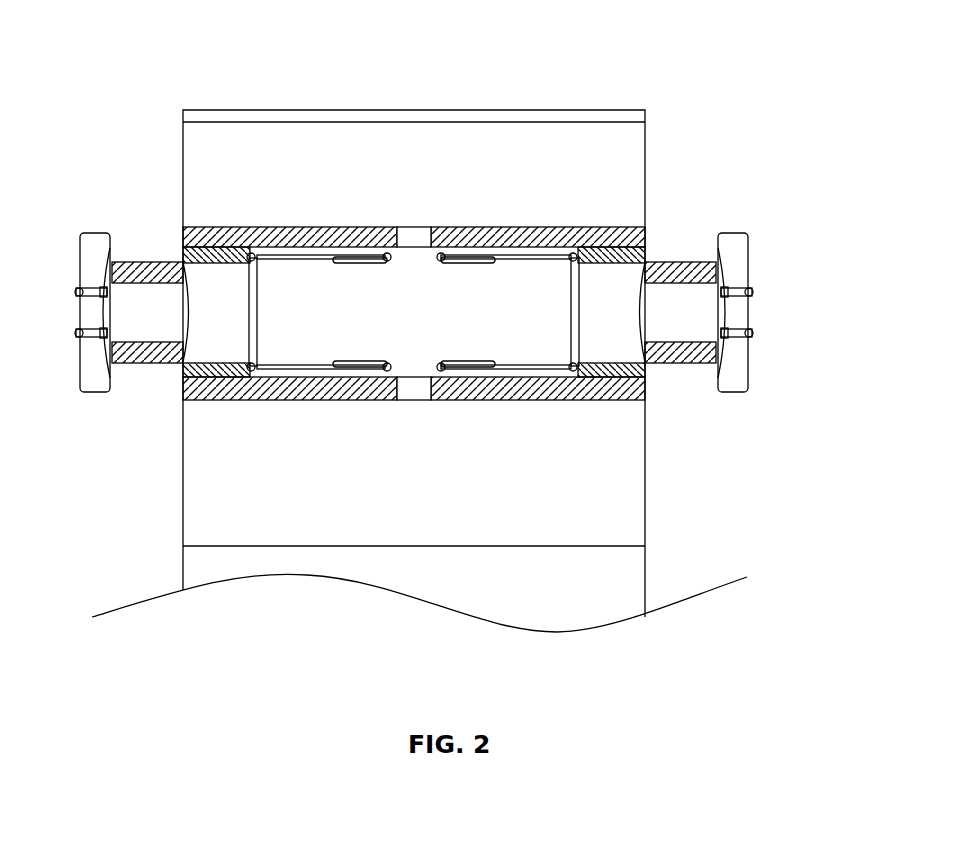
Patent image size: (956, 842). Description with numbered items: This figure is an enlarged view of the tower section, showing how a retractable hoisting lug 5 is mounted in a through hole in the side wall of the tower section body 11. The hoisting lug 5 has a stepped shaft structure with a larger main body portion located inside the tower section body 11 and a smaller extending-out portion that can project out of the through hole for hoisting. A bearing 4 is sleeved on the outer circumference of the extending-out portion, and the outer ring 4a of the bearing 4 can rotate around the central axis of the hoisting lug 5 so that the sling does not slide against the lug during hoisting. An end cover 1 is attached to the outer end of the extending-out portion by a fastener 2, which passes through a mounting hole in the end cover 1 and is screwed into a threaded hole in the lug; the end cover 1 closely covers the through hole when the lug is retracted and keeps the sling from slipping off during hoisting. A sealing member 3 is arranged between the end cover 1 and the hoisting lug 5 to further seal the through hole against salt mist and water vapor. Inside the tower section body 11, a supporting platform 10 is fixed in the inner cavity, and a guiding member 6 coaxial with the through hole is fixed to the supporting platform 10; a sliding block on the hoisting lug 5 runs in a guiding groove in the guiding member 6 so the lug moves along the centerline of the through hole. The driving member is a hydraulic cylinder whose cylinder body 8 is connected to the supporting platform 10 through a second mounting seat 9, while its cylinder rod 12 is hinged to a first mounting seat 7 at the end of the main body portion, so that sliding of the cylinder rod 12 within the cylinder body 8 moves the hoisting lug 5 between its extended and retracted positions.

The end cover 1 is at (737, 252).
The fastener 2 is at (733, 332).
The sealing member 3 is at (720, 315).
The bearing 4 is at (688, 363).
The outer ring 4a is at (660, 363).
The hoisting lug 5 is at (607, 330).
The guiding member 6 is at (610, 400).
The first mounting seat 7 is at (647, 233).
The cylinder body 8 is at (472, 228).
The second mounting seat 9 is at (437, 228).
The supporting platform 10 is at (455, 400).
The tower section body 11 is at (328, 130).
The cylinder rod 12 is at (520, 400).